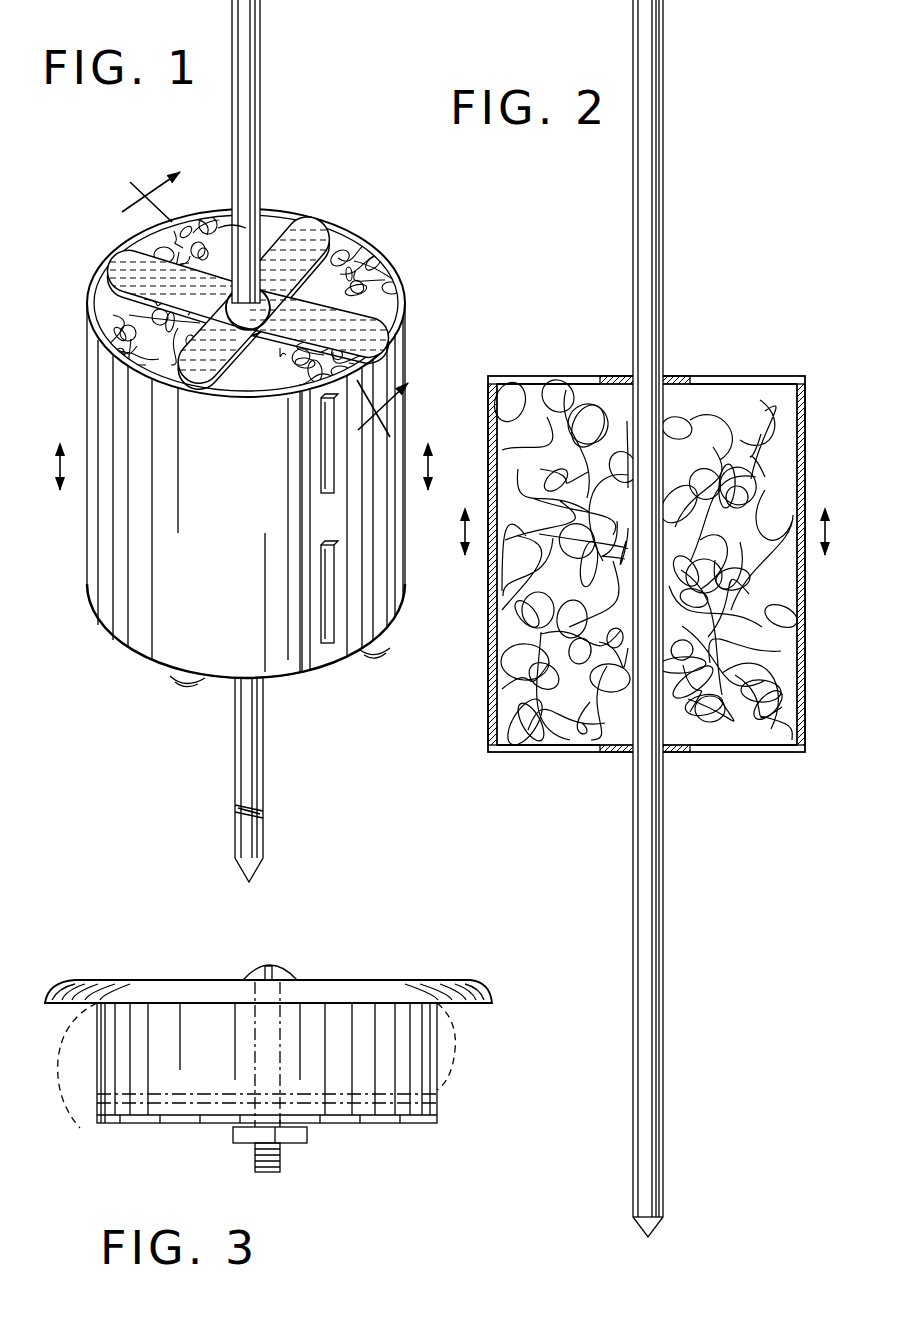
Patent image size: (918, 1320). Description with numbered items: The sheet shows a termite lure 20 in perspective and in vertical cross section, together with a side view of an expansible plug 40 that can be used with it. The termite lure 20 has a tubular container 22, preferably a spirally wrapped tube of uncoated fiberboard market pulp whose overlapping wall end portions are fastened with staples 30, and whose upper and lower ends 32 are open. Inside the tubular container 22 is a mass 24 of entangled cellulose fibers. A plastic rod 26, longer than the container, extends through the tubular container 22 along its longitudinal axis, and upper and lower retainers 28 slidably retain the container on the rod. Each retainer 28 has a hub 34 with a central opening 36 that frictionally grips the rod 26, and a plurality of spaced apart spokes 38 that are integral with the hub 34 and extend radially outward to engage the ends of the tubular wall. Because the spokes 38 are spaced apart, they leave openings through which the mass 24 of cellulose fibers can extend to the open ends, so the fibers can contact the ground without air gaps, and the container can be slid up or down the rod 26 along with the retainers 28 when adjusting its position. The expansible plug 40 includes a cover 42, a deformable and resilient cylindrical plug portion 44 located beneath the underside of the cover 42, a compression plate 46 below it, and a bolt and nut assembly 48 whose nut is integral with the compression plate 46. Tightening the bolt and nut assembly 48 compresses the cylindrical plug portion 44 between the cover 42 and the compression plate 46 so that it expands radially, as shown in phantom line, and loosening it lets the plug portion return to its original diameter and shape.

In FIG. 1, the termite lure 20 is at (256, 441).
In FIG. 2, the termite lure 20 is at (634, 618).
In FIG. 1, the tubular container 22 is at (222, 427).
In FIG. 2, the tubular container 22 is at (634, 588).
In FIG. 1, the mass of entangled cellulose fibers 24 is at (345, 235).
In FIG. 2, the mass of entangled cellulose fibers 24 is at (800, 645).
In FIG. 1, the rod 26 is at (258, 80).
In FIG. 2, the rod 26 is at (660, 165).
In FIG. 1, the upper and lower retainers 28 is at (282, 303).
In FIG. 2, the upper and lower retainers 28 is at (705, 378).
In FIG. 1, the staples 30 is at (315, 430).
In FIG. 1, the upper and lower ends 32 is at (105, 355).
In FIG. 2, the upper and lower ends 32 is at (545, 395).
In FIG. 1, the hub 34 is at (330, 250).
In FIG. 1, the central opening 36 is at (215, 230).
In FIG. 1, the spokes 38 is at (122, 240).
In FIG. 2, the spokes 38 is at (605, 332).
In FIG. 3, the expansible plug 40 is at (286, 1073).
In FIG. 3, the cover 42 is at (375, 980).
In FIG. 3, the cylindrical plug portion 44 is at (75, 1085).
In FIG. 3, the compression plate 46 is at (355, 1125).
In FIG. 3, the bolt and nut assembly 48 is at (233, 1145).